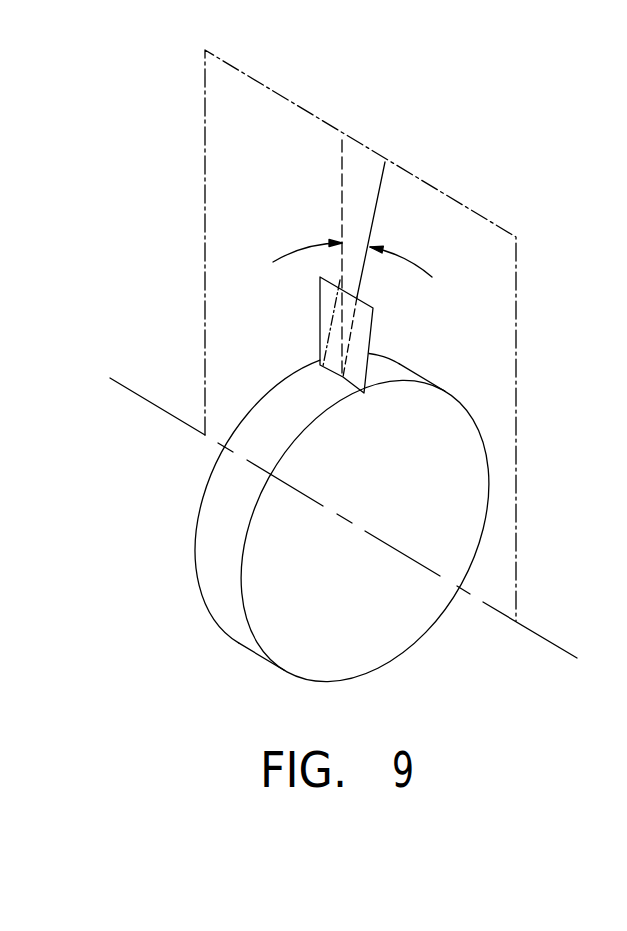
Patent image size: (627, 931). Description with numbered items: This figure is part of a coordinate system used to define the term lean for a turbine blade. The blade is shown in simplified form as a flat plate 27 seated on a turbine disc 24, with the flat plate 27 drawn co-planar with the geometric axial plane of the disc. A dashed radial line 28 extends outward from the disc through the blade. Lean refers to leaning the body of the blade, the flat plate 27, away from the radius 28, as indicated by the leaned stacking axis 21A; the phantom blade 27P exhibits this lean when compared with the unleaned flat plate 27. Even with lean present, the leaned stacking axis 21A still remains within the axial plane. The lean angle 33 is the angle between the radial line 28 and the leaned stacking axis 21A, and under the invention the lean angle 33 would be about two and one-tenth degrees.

The leaned stacking axis 21A is at (376, 208).
The turbine disc 24 is at (343, 556).
The flat plate 27 is at (320, 322).
The phantom blade 27P is at (373, 319).
The radial line 28 is at (342, 222).
The lean angle 33 is at (302, 250).